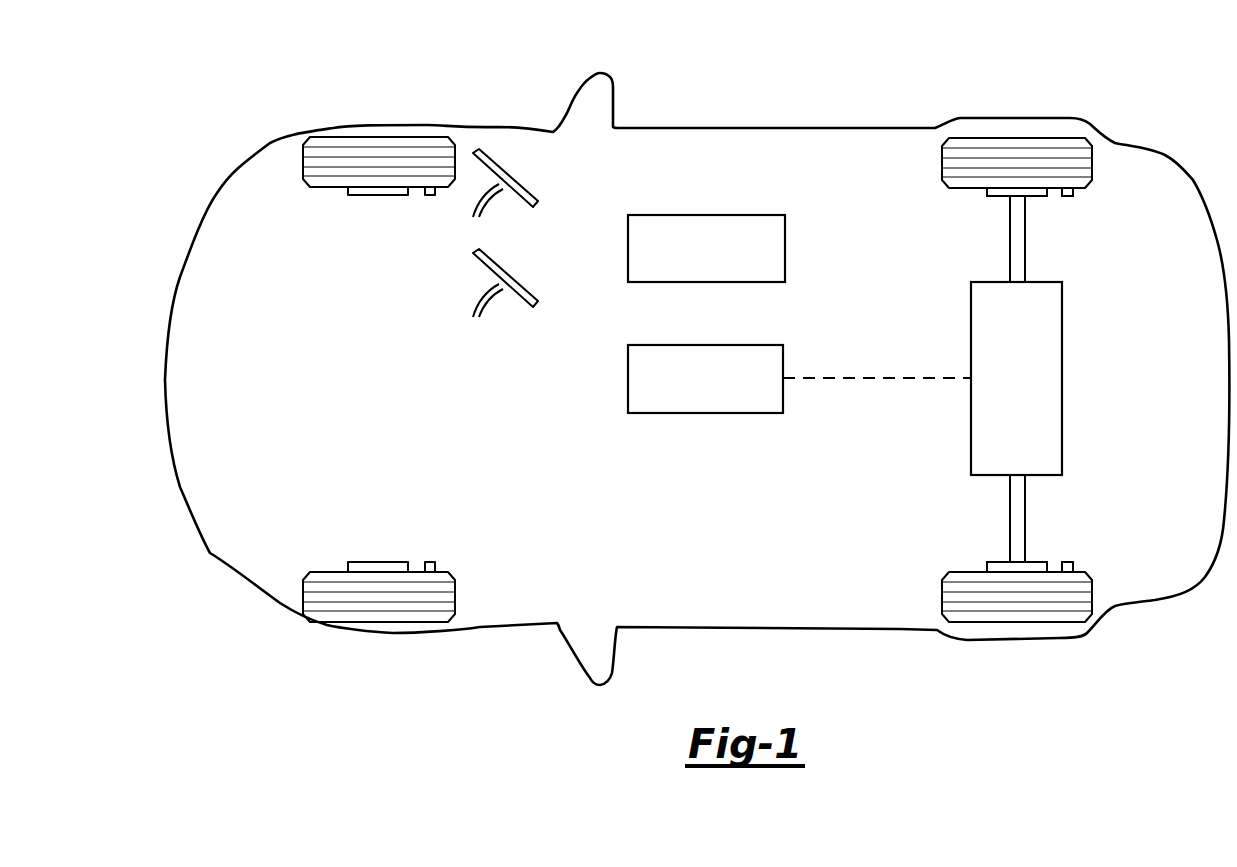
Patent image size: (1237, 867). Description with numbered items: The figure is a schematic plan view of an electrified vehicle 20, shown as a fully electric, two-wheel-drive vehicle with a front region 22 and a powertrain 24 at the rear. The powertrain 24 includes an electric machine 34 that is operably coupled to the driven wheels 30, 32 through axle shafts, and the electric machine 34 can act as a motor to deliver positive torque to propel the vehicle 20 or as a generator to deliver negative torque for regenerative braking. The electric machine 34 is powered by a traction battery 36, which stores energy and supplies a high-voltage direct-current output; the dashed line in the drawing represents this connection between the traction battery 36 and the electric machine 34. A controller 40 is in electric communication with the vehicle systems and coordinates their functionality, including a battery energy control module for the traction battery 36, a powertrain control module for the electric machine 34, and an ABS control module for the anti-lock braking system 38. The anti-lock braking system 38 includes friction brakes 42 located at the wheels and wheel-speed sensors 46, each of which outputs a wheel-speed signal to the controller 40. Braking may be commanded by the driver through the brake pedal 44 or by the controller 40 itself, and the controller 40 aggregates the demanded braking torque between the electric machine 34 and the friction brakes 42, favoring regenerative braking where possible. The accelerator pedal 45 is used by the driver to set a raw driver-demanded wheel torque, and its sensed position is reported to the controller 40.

The electrified vehicle 20 is at (770, 128).
The front end 22 is at (299, 321).
The powertrain 24 is at (1083, 338).
The driven wheel 30 is at (1015, 138).
The driven wheel 32 is at (1016, 622).
The electric machine 34 is at (1001, 384).
The traction battery 36 is at (783, 358).
The anti-lock braking system 38 is at (1062, 240).
The controller 40 is at (706, 215).
The friction brake 42 is at (993, 197).
The brake pedal 44 is at (530, 290).
The accelerator pedal 45 is at (530, 188).
The wheel-speed sensor 46 is at (1067, 197).